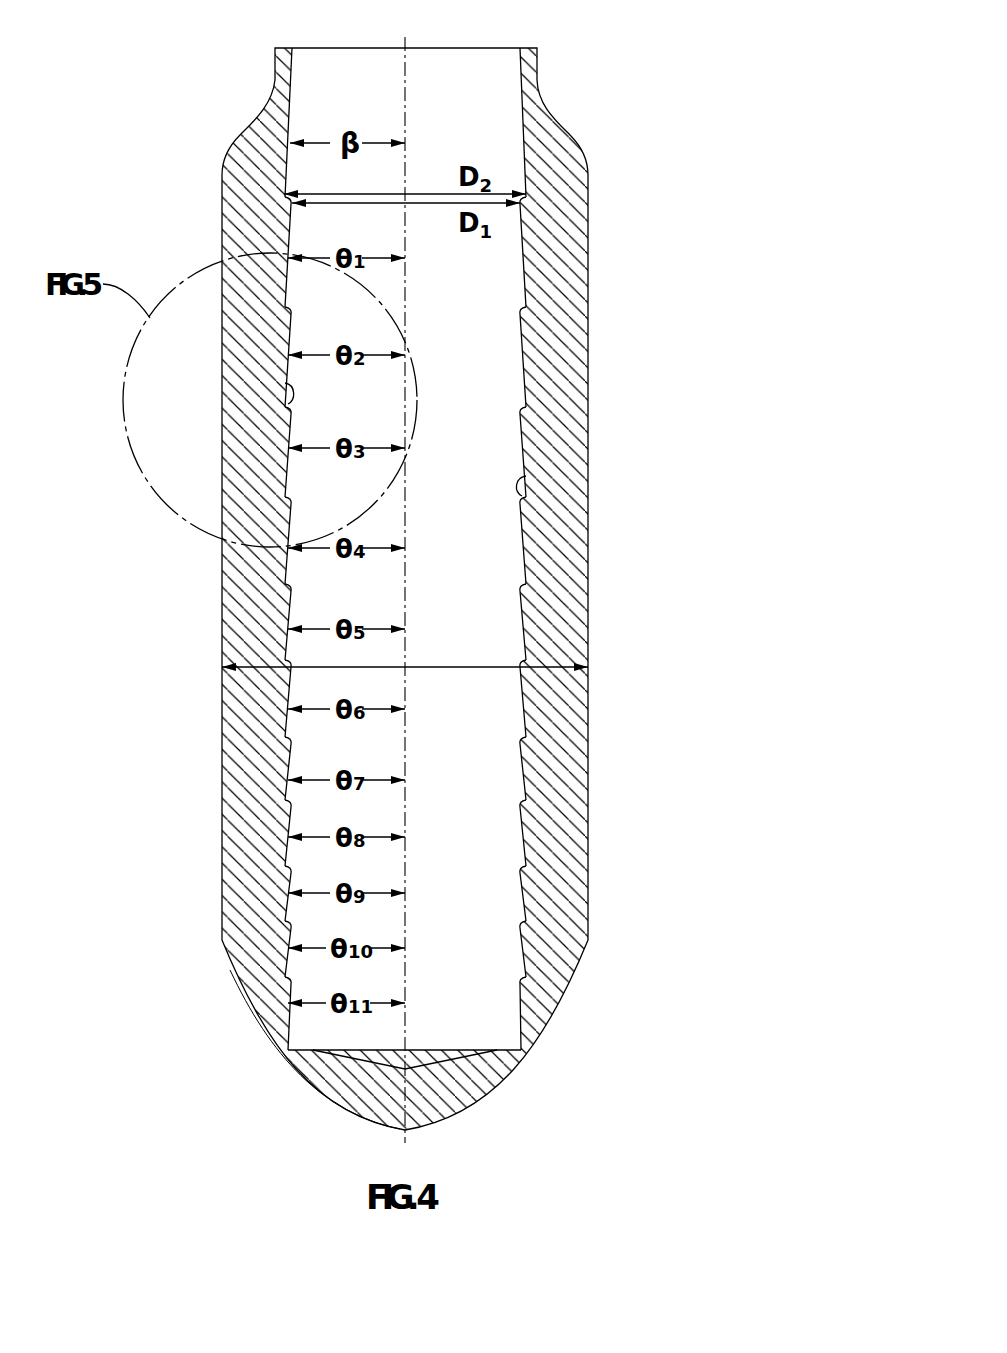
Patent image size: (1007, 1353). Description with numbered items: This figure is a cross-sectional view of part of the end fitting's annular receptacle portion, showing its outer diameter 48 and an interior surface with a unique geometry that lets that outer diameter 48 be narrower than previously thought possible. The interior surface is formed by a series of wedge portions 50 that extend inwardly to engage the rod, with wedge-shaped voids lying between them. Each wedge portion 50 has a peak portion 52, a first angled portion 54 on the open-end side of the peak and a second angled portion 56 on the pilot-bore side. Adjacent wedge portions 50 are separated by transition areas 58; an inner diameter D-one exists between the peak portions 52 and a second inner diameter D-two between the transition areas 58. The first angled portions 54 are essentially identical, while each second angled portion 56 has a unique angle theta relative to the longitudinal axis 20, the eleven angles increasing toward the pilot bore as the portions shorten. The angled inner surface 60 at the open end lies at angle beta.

The longitudinal axis 20 is at (405, 78).
The outer diameter 48 is at (437, 667).
The wedge portion 50 is at (522, 510).
The peak portion 52 is at (522, 309).
The first angled portion 54 is at (287, 398).
The second angled portion 56 is at (288, 370).
The transition area 58 is at (527, 587).
The angled inner surface 60 is at (284, 166).